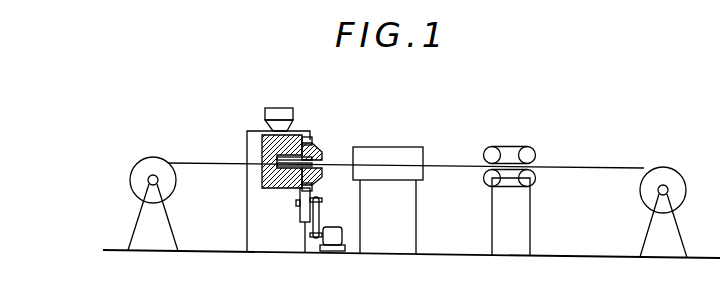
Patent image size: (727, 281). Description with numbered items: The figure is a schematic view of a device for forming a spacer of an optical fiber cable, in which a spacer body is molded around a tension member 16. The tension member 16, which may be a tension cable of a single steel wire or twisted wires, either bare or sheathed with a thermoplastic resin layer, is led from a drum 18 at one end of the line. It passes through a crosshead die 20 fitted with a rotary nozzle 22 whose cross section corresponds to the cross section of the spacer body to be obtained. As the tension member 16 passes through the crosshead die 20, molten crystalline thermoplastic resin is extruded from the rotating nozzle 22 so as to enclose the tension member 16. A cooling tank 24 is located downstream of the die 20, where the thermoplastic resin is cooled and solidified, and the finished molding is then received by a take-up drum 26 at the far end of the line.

The tension member 16 is at (215, 162).
The drum 18 is at (147, 165).
The crosshead die 20 is at (290, 140).
The rotary nozzle 22 is at (323, 148).
The cooling tank 24 is at (420, 147).
The take-up drum 26 is at (681, 167).